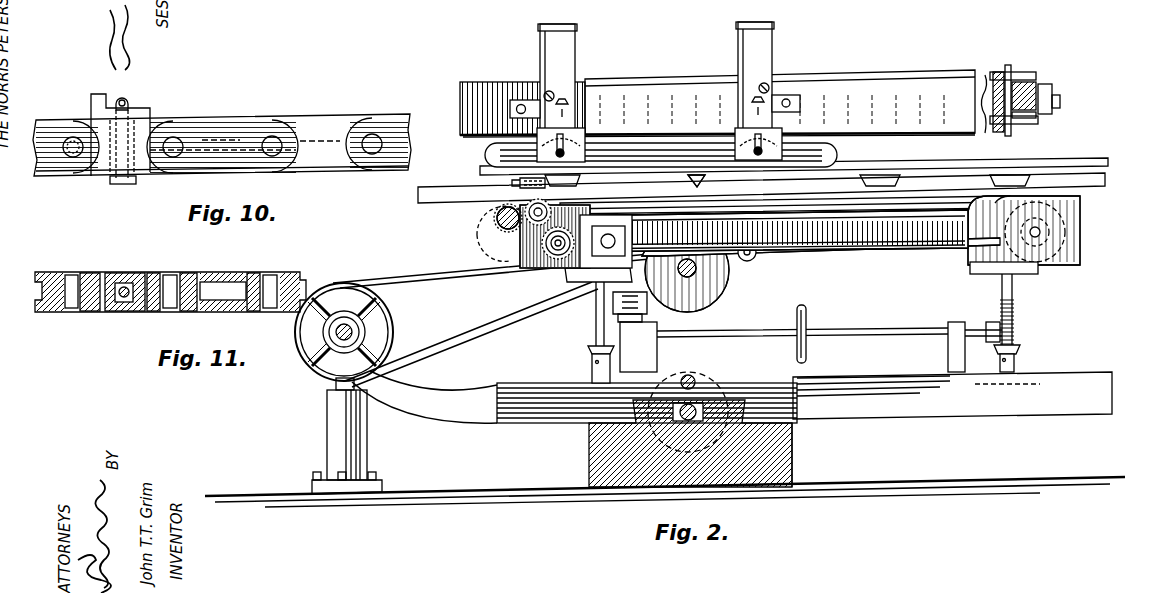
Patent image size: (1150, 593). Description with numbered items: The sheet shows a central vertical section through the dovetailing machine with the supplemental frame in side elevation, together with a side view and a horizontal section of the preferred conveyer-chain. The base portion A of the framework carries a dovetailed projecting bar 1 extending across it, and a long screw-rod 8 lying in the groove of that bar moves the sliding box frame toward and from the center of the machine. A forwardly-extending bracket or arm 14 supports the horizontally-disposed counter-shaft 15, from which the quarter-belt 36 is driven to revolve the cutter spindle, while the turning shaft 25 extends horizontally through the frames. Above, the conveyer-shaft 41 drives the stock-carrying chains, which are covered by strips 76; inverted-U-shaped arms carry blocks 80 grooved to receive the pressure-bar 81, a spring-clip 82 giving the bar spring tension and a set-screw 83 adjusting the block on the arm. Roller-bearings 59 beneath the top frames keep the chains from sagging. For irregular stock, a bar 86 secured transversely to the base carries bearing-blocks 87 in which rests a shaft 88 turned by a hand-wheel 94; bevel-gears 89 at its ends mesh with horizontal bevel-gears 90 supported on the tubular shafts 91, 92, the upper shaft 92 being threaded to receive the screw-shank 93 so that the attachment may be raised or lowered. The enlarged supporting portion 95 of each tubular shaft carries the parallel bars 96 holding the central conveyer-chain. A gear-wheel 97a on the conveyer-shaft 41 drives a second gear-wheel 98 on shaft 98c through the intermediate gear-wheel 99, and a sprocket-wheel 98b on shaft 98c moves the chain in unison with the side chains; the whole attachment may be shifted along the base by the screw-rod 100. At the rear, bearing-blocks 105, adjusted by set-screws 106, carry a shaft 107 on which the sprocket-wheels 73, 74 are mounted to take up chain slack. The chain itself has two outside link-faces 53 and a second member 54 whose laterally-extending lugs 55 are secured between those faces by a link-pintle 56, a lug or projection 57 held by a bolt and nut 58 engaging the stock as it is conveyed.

In FIG. 2, the dovetailed projecting bar 1 is at (728, 407).
In FIG. 2, the screw-rod 8 is at (672, 416).
In FIG. 2, the forwardly-extending bracket or arm 14 is at (470, 420).
In FIG. 2, the counter-shaft 15 is at (313, 368).
In FIG. 2, the turning shaft 25 is at (720, 287).
In FIG. 2, the quarter-belt 36 is at (424, 273).
In FIG. 2, the conveyer-shaft 41 is at (500, 213).
In FIG. 10, the outside link-faces 53 is at (88, 160).
In FIG. 11, the outside link-faces 53 is at (90, 272).
In FIG. 10, the second member 54 is at (142, 128).
In FIG. 11, the second member 54 is at (116, 272).
In FIG. 11, the laterally-extending lugs 55 is at (58, 272).
In FIG. 10, the link-pintle 56 is at (72, 138).
In FIG. 11, the link-pintle 56 is at (170, 273).
In FIG. 10, the lug or projection 57 is at (93, 117).
In FIG. 10, the bolt and nut 58 is at (132, 180).
In FIG. 2, the roller-bearings 59 is at (755, 258).
In FIG. 2, the rear sprocket-wheel 73 is at (1027, 76).
In FIG. 2, the rear sprocket-wheel 74 is at (1037, 120).
In FIG. 2, the strips 76 is at (892, 68).
In FIG. 2, the block 80 is at (784, 126).
In FIG. 2, the pressure-bar 81 is at (657, 153).
In FIG. 2, the spring-clip 82 is at (838, 146).
In FIG. 2, the set-screw 83 is at (563, 100).
In FIG. 2, the bar 86 is at (1037, 418).
In FIG. 2, the bearing-blocks 87 is at (946, 321).
In FIG. 2, the shaft 88 is at (857, 330).
In FIG. 2, the bevel-gear 89 is at (990, 322).
In FIG. 2, the bevel-gear 90 is at (1016, 347).
In FIG. 2, the tubular shaft 91 is at (1017, 365).
In FIG. 2, the tubular shaft 92 is at (1012, 305).
In FIG. 2, the screw-shank 93 is at (1013, 320).
In FIG. 2, the hand-wheel 94 is at (803, 308).
In FIG. 2, the supporting portion 95 is at (1038, 270).
In FIG. 2, the parallel bars 96 is at (1083, 242).
In FIG. 2, the gear-wheel 97a is at (493, 205).
In FIG. 2, the second gear-wheel 98 is at (533, 270).
In FIG. 2, the sprocket-wheel 98b is at (593, 212).
In FIG. 2, the shaft 98c is at (540, 248).
In FIG. 2, the intermediate gear-wheel 99 is at (540, 202).
In FIG. 2, the screw-rod 100 is at (693, 378).
In FIG. 2, the bearing-blocks 105 is at (992, 88).
In FIG. 2, the set-screws 106 is at (1057, 93).
In FIG. 2, the shaft 107 is at (1003, 67).
In FIG. 2, the base portion A is at (795, 458).